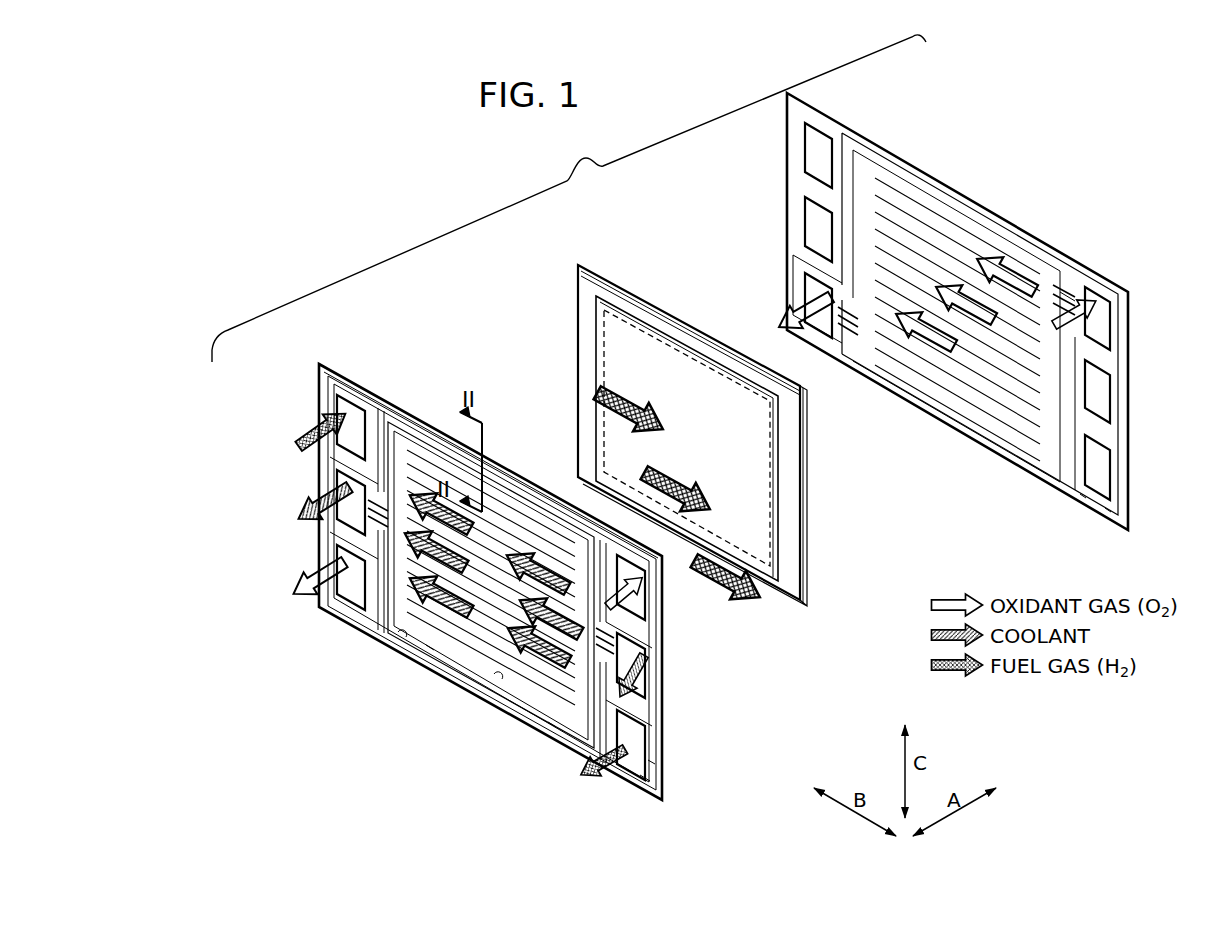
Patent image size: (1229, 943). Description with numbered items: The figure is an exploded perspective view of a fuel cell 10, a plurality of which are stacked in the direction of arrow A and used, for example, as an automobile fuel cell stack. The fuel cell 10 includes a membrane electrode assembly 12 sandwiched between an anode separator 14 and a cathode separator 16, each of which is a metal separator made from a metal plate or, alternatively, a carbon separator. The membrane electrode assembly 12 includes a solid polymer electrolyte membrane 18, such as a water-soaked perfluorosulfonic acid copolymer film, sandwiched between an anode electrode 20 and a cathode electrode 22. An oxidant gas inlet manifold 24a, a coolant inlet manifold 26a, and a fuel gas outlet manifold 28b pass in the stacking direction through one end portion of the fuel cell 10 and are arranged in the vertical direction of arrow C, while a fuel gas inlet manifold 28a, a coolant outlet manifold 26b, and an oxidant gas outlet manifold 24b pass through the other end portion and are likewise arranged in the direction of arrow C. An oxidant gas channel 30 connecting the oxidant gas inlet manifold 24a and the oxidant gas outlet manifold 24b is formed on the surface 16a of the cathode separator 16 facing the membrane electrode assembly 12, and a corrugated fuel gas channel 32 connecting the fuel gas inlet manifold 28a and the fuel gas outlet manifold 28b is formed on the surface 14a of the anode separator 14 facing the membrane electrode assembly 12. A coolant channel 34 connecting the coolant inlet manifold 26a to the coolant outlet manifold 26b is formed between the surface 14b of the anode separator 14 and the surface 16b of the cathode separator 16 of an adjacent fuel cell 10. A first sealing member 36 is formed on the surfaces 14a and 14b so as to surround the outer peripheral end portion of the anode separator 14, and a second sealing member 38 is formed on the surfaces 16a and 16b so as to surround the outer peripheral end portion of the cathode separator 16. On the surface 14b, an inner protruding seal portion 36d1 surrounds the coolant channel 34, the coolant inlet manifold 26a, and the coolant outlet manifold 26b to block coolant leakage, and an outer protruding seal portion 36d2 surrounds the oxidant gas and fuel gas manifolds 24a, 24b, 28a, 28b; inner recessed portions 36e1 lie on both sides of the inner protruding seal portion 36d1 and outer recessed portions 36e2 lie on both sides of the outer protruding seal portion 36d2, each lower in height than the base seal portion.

The fuel cell 10 is at (614, 139).
The membrane electrode assembly 12 is at (604, 272).
The anode separator 14 is at (339, 366).
The surface of the anode separator 14a is at (650, 758).
The surface of the anode separator 14b is at (646, 776).
The cathode separator 16 is at (821, 107).
The surface of the cathode separator 16a is at (1082, 494).
The surface of the cathode separator 16b is at (1108, 508).
The solid polymer electrolyte membrane 18 is at (792, 490).
The anode electrode 20 is at (622, 358).
The cathode electrode 22 is at (638, 350).
The oxidant gas inlet manifold 24a is at (633, 608).
The oxidant gas outlet manifold 24b is at (350, 570).
The coolant inlet manifold 26a is at (635, 640).
The coolant outlet manifold 26b is at (347, 481).
The fuel gas inlet manifold 28a is at (347, 410).
The fuel gas outlet manifold 28b is at (635, 750).
The oxidant gas channel 30 is at (965, 378).
The fuel gas channel 32 is at (540, 528).
The coolant channel 34 is at (477, 650).
The first sealing member 36 is at (437, 420).
The inner protruding seal portion 36d1 is at (430, 648).
The outer protruding seal portion 36d2 is at (552, 727).
The inner recessed portion 36e1 is at (507, 693).
The outer recessed portion 36e2 is at (410, 649).
The second sealing member 38 is at (1081, 252).